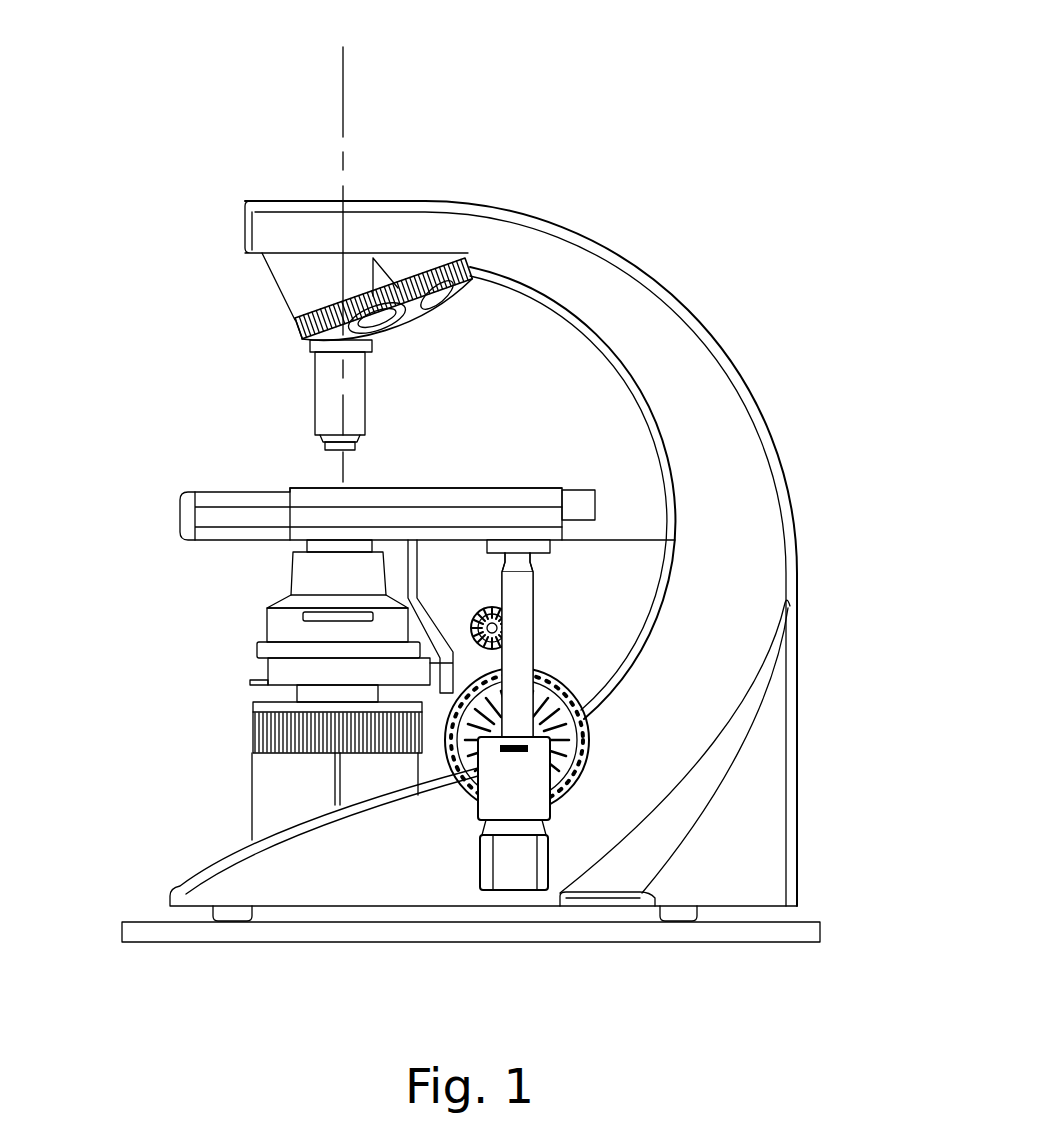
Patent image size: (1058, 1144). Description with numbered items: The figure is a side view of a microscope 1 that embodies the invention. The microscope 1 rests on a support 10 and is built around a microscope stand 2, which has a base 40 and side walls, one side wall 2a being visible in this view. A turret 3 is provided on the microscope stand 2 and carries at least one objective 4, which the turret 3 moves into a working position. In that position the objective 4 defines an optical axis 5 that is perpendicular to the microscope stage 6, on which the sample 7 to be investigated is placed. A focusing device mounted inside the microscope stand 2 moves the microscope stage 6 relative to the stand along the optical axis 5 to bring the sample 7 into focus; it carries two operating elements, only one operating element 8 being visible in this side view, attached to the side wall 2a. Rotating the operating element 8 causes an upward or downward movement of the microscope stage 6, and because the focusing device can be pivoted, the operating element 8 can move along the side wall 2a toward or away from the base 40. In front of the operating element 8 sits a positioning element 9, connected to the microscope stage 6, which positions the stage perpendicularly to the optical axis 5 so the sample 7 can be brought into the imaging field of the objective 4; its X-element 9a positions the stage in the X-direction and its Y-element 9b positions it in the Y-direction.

The microscope 1 is at (598, 114).
The microscope stand 2 is at (590, 240).
The side wall 2a is at (677, 338).
The turret 3 is at (293, 327).
The objective 4 is at (357, 385).
The optical axis 5 is at (343, 80).
The microscope stage 6 is at (213, 522).
The sample 7 is at (320, 485).
The operating element 8 is at (595, 757).
The positioning element 9 is at (520, 627).
The X-element 9a is at (500, 777).
The Y-element 9b is at (517, 870).
The support 10 is at (317, 935).
The base 40 is at (395, 907).